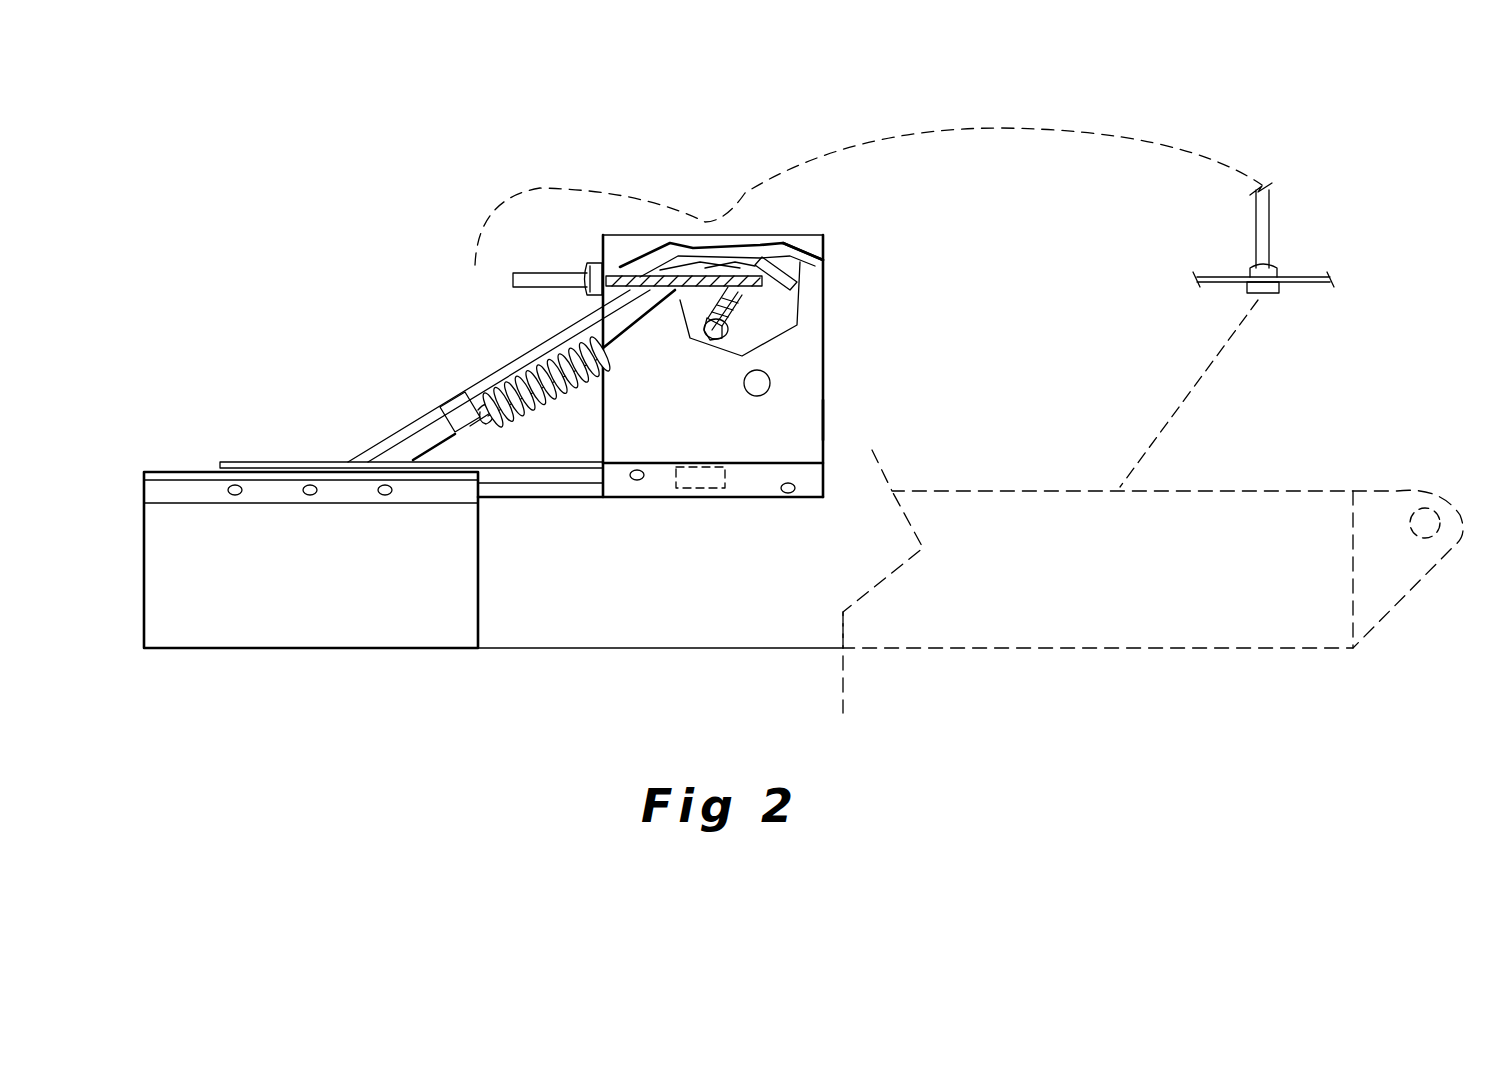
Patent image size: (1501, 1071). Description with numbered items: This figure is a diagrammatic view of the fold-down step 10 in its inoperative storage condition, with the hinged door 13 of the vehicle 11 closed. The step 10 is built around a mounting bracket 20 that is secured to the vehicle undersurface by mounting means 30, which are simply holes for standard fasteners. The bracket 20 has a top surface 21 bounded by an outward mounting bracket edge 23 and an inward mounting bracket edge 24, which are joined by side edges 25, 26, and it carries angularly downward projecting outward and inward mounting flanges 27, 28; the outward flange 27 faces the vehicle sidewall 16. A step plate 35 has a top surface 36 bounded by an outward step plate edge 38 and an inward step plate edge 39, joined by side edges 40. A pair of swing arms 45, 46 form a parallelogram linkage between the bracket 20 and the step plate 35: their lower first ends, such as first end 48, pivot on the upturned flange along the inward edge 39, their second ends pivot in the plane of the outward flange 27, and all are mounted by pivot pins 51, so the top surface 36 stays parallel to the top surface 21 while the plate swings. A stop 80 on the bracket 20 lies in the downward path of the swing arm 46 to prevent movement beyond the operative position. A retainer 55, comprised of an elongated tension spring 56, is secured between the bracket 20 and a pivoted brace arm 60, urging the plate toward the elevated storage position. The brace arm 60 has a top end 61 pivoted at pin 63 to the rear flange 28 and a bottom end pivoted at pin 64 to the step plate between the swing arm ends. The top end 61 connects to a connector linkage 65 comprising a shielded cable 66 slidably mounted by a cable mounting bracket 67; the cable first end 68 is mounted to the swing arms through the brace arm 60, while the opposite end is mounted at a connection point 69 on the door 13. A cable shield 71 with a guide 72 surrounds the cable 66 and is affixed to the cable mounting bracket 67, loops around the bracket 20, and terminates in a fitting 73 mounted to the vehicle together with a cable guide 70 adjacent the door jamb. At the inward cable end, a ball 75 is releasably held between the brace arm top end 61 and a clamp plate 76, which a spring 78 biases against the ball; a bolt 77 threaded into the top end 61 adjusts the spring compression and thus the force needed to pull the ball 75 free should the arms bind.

The fold-down step 10 is at (880, 207).
The vehicle 11 is at (705, 652).
The hinged door 13 is at (998, 622).
The sidewall 16 is at (800, 650).
The mounting bracket 20 is at (828, 352).
The top surface 21 is at (707, 450).
The outward mounting bracket edge 23 is at (792, 466).
The inward mounting bracket edge 24 is at (826, 256).
The mounting bracket side edge 25 is at (612, 418).
The mounting bracket side edge 26 is at (828, 434).
The outward mounting flange 27 is at (733, 497).
The inward mounting flange 28 is at (800, 312).
The mounting means 30 is at (746, 388).
The step plate 35 is at (300, 655).
The top surface 36 is at (336, 603).
The outward step plate edge 38 is at (428, 656).
The inward step plate edge 39 is at (482, 508).
The step plate side edge 40 is at (150, 610).
The swing arm 45 is at (565, 503).
The swing arm 46 is at (566, 470).
The lower first end 48 is at (233, 462).
The pivot pin 51 is at (237, 497).
The retainer 55 is at (518, 363).
The tension spring 56 is at (604, 372).
The brace arm 60 is at (398, 425).
The top end 61 is at (743, 285).
The pin 63 is at (710, 280).
The pin 64 is at (312, 497).
The connector linkage 65 is at (530, 276).
The shielded cable 66 is at (640, 275).
The cable mounting bracket 67 is at (585, 300).
The first end 68 is at (765, 284).
The connection point 69 is at (1122, 492).
The cable guide 70 is at (1270, 293).
The cable shield 71 is at (1270, 253).
The guide 72 is at (596, 265).
The fitting 73 is at (1250, 268).
The ball 75 is at (785, 255).
The clamp plate 76 is at (740, 302).
The bolt 77 is at (705, 322).
The spring 78 is at (738, 330).
The stop 80 is at (685, 492).